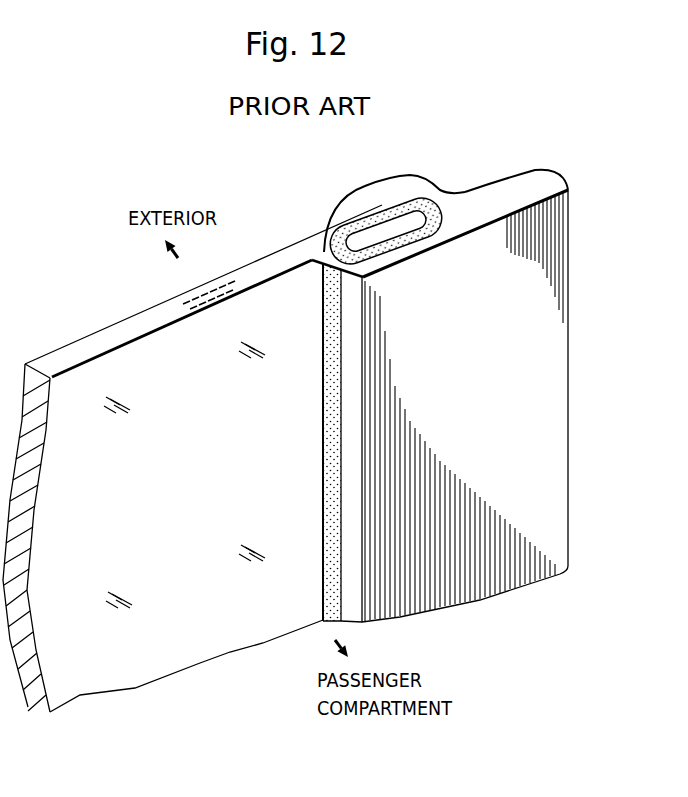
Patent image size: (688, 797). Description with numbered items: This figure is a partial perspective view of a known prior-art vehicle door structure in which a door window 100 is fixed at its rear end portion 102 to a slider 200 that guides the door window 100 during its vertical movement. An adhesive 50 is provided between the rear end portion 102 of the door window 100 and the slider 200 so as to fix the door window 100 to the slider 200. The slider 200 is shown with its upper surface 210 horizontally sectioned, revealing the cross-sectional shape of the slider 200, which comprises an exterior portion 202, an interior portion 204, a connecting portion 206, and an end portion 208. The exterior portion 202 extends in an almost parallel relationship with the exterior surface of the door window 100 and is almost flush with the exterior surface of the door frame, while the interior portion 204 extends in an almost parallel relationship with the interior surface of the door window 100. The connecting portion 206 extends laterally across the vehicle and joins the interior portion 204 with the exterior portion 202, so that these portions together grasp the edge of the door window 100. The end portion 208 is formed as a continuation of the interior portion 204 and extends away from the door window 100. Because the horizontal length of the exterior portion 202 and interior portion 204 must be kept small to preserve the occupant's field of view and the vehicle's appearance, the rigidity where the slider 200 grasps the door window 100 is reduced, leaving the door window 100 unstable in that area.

The door window 100 is at (193, 676).
The adhesive 50 is at (333, 468).
The slider 200 is at (478, 357).
The exterior portion 202 is at (383, 196).
The interior portion 204 is at (430, 247).
The connecting portion 206 is at (435, 193).
The end portion 208 is at (522, 185).
The upper surface 210 is at (480, 215).
The rear end portion 102 is at (382, 220).